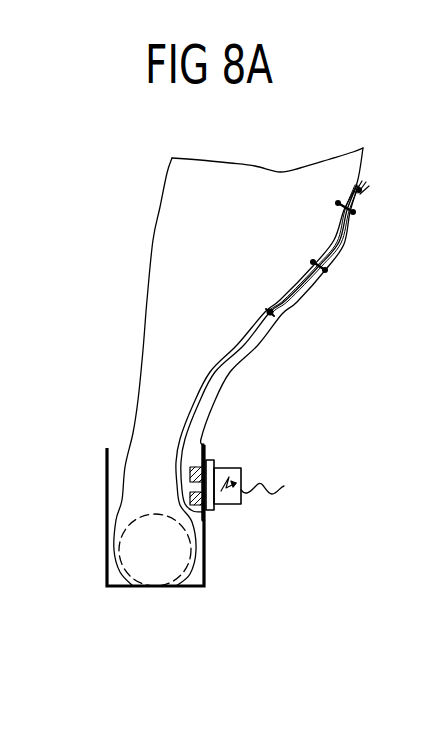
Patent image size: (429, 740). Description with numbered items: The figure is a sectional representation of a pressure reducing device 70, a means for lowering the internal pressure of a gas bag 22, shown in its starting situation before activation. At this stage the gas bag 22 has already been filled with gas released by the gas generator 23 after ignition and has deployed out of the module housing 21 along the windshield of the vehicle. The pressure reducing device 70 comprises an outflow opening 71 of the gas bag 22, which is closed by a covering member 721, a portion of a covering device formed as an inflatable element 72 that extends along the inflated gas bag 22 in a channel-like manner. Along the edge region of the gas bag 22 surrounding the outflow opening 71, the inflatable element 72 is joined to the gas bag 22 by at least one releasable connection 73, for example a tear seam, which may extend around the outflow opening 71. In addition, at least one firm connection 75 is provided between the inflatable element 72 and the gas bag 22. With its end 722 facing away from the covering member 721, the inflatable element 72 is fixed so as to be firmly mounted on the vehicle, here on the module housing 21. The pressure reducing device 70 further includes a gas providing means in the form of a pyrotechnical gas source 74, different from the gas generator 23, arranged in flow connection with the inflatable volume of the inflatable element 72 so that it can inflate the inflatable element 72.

The module housing 21 is at (107, 588).
The gas bag 22 is at (214, 177).
The gas generator 23 is at (162, 567).
The pressure reducing device 70 is at (223, 435).
The outflow opening 71 is at (342, 218).
The inflatable element 72 is at (290, 380).
The covering member 721 is at (337, 242).
The end of the inflatable element 722 is at (204, 514).
The releasable connection 73 is at (358, 210).
The gas source 74 is at (241, 467).
The firm connection 75 is at (268, 311).